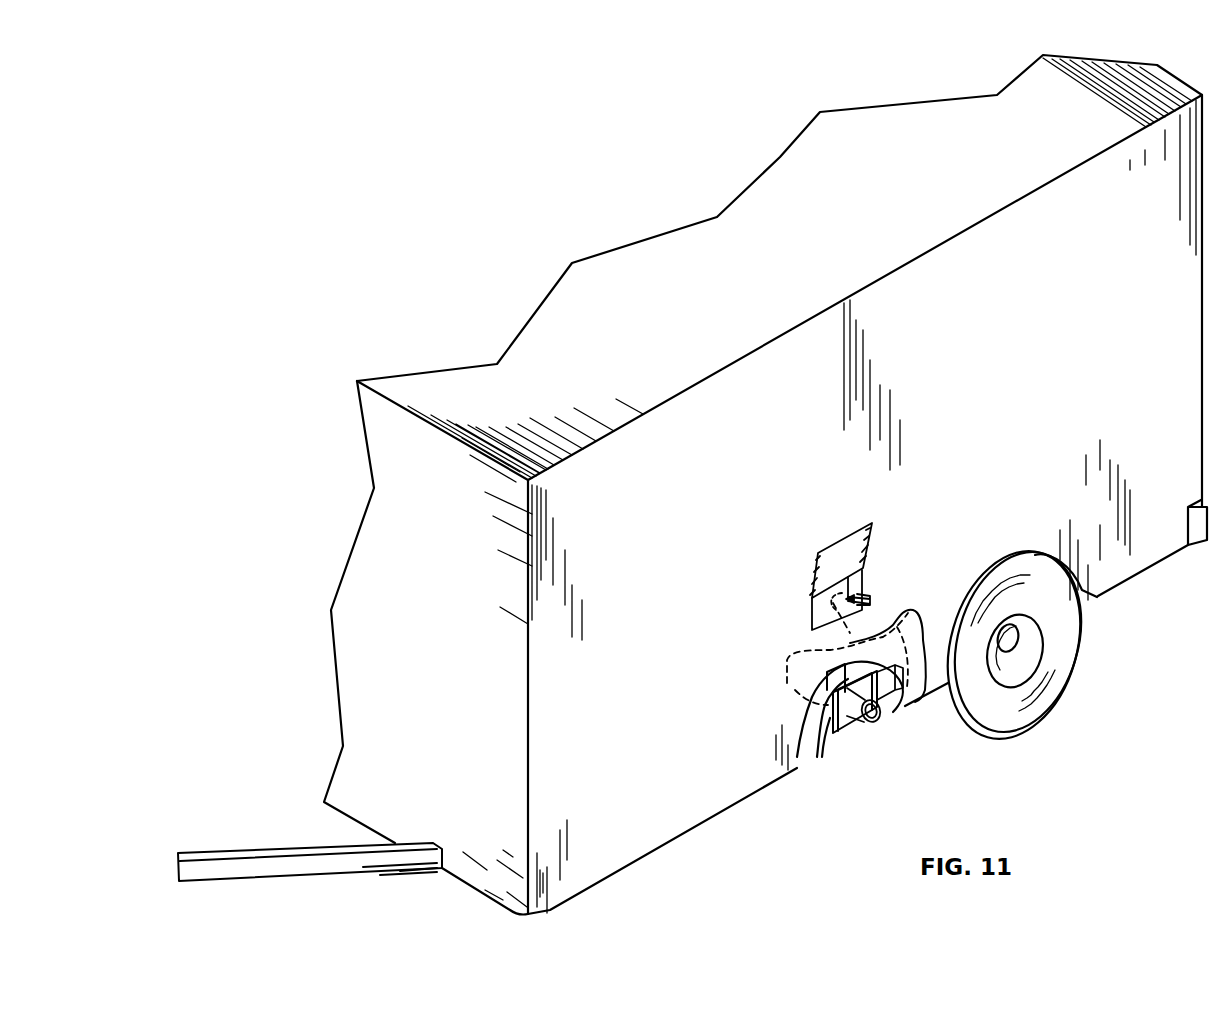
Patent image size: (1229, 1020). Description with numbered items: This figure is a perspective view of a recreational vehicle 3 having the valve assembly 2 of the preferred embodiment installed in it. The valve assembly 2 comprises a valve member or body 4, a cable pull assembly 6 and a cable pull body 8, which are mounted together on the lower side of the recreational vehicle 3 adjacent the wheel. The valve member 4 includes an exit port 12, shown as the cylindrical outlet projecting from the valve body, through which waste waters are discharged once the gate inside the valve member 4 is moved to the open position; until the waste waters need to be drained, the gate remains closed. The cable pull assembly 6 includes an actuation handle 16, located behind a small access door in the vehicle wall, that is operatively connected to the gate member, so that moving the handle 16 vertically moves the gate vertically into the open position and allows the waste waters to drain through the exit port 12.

The valve assembly 2 is at (850, 753).
The recreational vehicle 3 is at (626, 743).
The valve member 4 is at (893, 707).
The cable pull assembly 6 is at (906, 626).
The cable pull body 8 is at (903, 697).
The exit port 12 is at (878, 722).
The actuation handle 16 is at (877, 605).